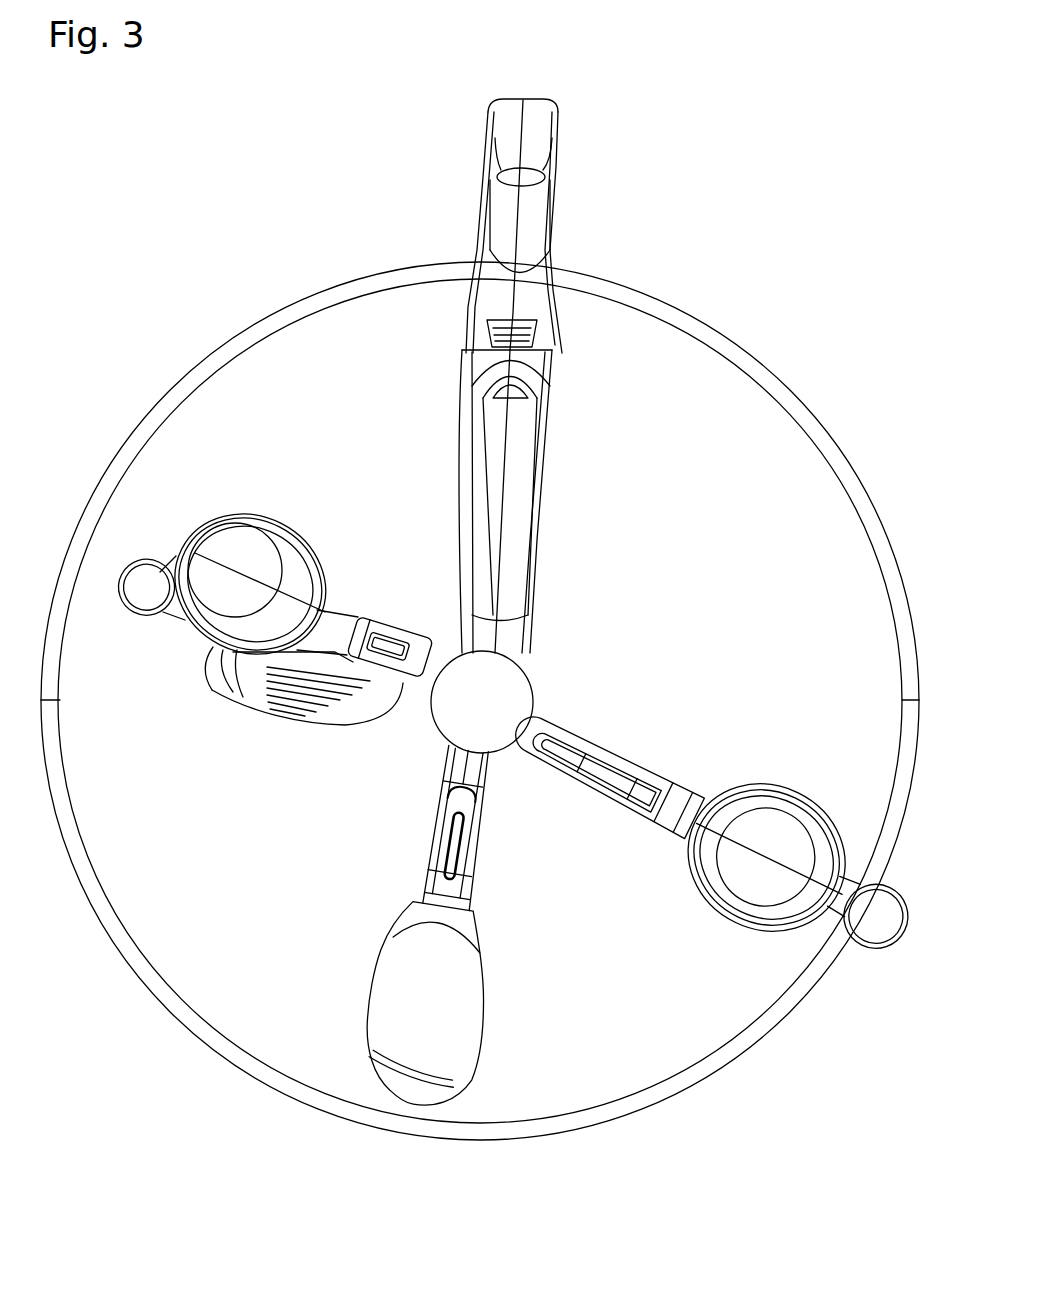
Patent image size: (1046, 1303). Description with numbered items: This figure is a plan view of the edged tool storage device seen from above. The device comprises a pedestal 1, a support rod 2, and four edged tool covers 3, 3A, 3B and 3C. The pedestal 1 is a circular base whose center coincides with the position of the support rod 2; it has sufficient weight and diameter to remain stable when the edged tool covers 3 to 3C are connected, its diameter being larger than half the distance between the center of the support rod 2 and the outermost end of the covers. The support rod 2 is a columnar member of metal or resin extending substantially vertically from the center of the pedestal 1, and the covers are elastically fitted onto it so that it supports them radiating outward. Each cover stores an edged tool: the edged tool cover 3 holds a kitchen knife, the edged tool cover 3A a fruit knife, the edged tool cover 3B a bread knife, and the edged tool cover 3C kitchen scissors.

The pedestal 1 is at (702, 1022).
The support rod 2 is at (508, 692).
The edged tool cover 3 is at (893, 962).
The edged tool cover 3A is at (377, 1098).
The edged tool cover 3B is at (185, 522).
The edged tool cover 3C is at (550, 102).